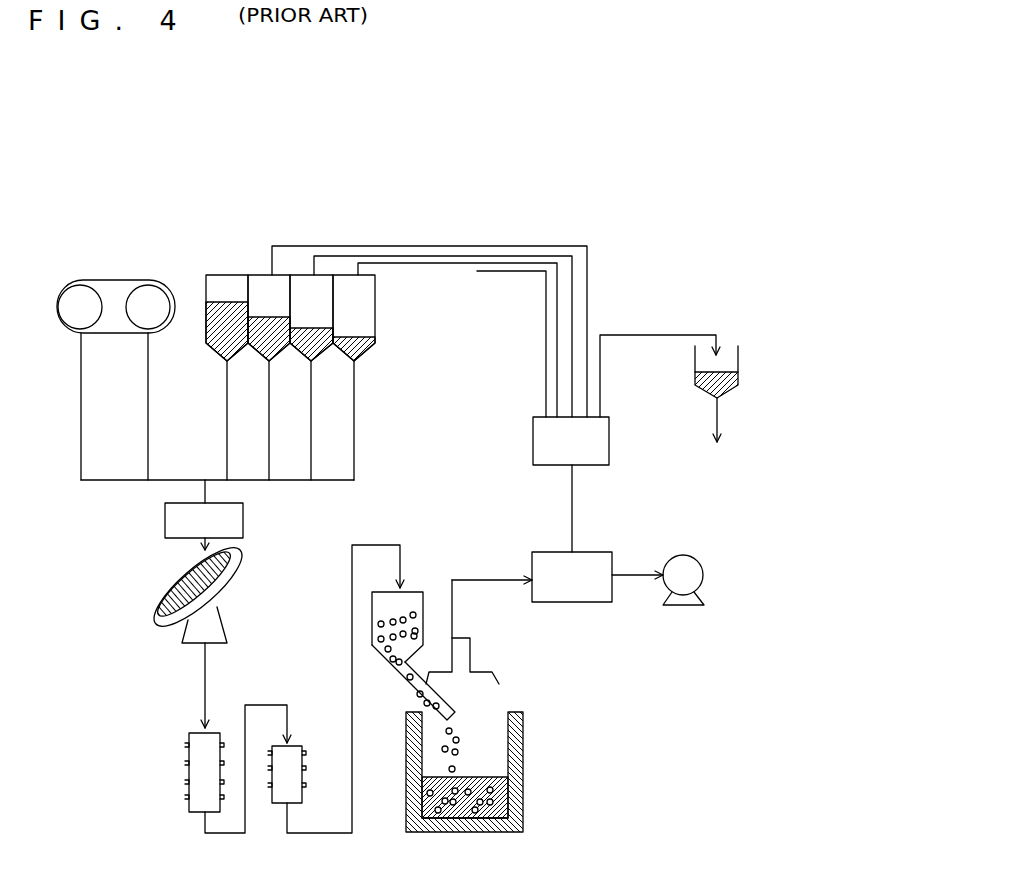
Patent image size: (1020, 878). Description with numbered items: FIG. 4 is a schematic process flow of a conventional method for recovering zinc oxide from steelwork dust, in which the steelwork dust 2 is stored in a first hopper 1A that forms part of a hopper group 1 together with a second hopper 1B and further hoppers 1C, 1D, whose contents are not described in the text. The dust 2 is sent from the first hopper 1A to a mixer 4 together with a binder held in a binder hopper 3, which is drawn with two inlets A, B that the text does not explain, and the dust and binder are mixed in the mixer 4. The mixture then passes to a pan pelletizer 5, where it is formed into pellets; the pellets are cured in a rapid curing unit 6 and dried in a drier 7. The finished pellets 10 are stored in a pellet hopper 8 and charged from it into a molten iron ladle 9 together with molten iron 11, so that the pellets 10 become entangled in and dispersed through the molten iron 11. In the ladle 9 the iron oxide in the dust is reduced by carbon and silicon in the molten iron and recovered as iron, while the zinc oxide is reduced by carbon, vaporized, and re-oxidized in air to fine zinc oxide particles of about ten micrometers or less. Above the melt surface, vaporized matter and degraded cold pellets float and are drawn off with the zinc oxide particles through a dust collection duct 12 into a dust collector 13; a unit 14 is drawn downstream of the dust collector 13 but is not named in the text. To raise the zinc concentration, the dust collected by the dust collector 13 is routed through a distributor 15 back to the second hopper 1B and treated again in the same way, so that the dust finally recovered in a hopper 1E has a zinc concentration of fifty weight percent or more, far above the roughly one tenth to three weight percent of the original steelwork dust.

The raw material supply system 1 is at (446, 320).
The first hopper 1A is at (213, 345).
The second hopper 1B is at (277, 350).
The third raw material hopper 1C is at (322, 353).
The fourth raw material hopper 1D is at (365, 345).
The hopper 1E is at (730, 388).
The steelwork dust 2 is at (228, 302).
The binder hopper 3 is at (110, 361).
The gas A is at (80, 295).
The gas B is at (148, 300).
The mixer 4 is at (243, 519).
The sieve 5 is at (219, 622).
The rapid curing unit 6 is at (188, 788).
The drier 7 is at (295, 775).
The pellet hopper 8 is at (424, 647).
The molten iron ladle 9 is at (507, 788).
The pellets 10 is at (422, 630).
The molten iron 11 is at (497, 794).
The dust collection duct 12 is at (470, 655).
The dust collector 13 is at (572, 595).
The exhaust pump 14 is at (698, 570).
The distributor 15 is at (611, 442).